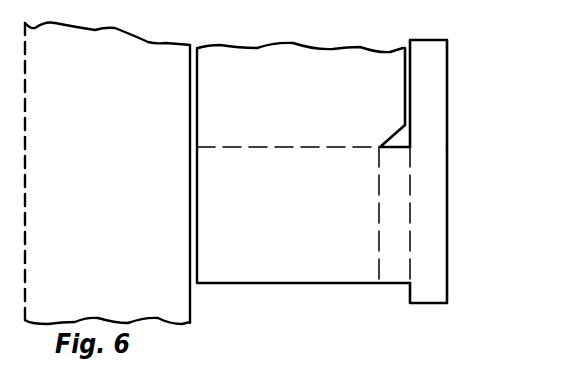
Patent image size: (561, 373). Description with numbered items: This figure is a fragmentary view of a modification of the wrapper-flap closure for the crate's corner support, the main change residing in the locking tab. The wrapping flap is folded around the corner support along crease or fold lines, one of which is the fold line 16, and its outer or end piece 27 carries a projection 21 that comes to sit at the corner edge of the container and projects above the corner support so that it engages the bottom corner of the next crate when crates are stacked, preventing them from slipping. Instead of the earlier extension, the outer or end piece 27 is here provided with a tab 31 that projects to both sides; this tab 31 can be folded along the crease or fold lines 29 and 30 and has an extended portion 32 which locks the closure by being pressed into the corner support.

The crease or fold line 16 is at (359, 146).
The projection 21 is at (410, 60).
The outer or end piece 27 is at (362, 264).
The crease or fold line 29 is at (412, 168).
The crease or fold line 30 is at (380, 205).
The tab 31 is at (437, 252).
The extended portion 32 is at (435, 79).